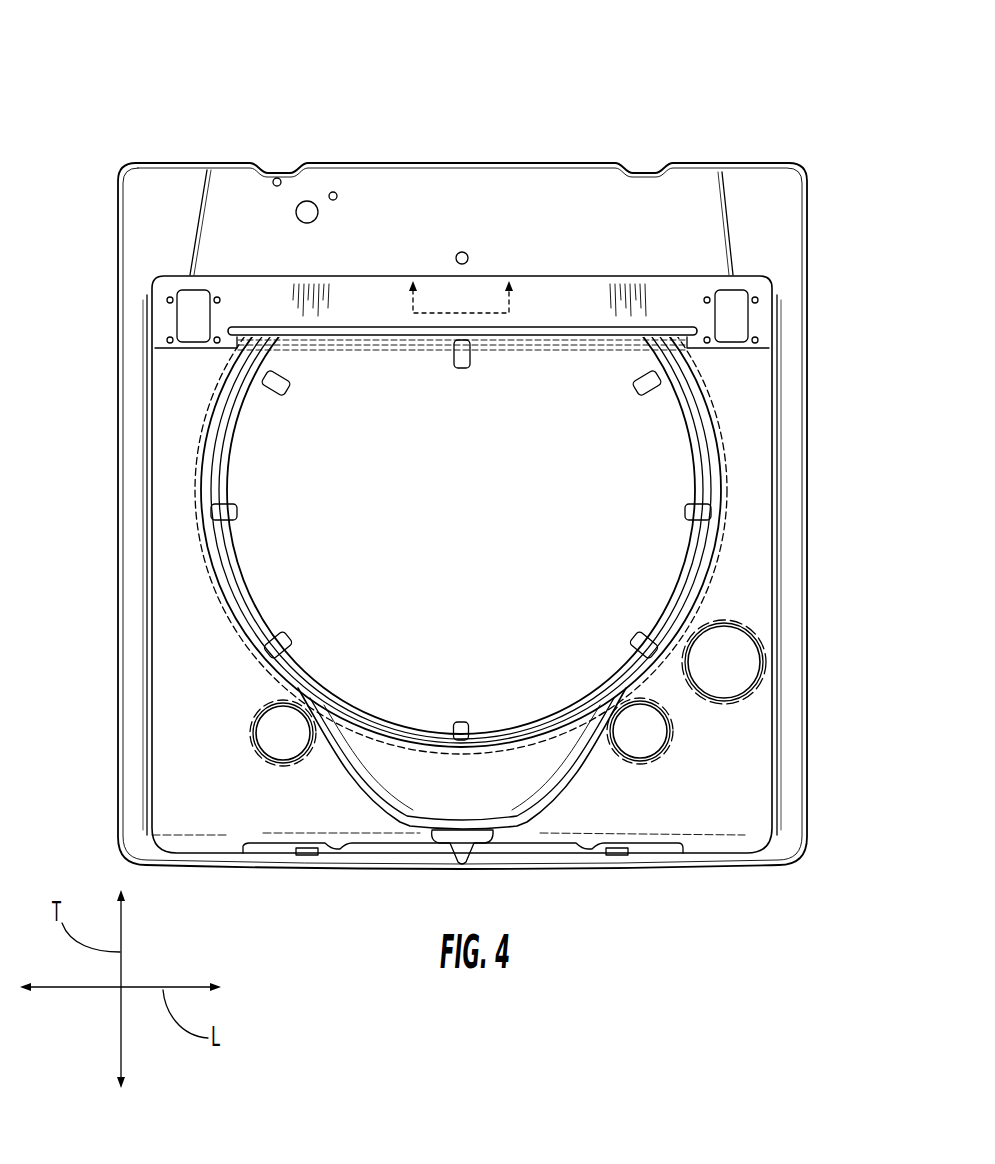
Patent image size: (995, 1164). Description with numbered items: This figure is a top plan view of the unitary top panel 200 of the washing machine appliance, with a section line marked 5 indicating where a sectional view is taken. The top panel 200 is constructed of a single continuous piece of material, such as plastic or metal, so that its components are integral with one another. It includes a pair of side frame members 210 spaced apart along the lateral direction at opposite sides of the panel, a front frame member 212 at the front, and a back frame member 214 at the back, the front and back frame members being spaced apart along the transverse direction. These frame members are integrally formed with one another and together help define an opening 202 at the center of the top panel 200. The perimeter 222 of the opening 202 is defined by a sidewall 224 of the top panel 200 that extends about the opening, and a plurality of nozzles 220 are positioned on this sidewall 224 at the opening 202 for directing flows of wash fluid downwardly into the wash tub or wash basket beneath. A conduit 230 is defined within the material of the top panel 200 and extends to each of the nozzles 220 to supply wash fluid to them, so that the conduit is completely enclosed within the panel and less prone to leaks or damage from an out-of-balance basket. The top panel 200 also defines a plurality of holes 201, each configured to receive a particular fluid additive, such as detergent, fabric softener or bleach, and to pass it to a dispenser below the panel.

The top panel 200 is at (100, 133).
The plurality of holes 201 is at (285, 733).
The opening 202 is at (617, 485).
The side frame members 210 is at (135, 532).
The front frame member 212 is at (548, 858).
The back frame member 214 is at (526, 183).
The nozzles 220 is at (458, 370).
The perimeter 222 is at (233, 446).
The sidewall 224 is at (394, 354).
The conduit 230 is at (225, 618).
The section line 5- 5 is at (461, 280).